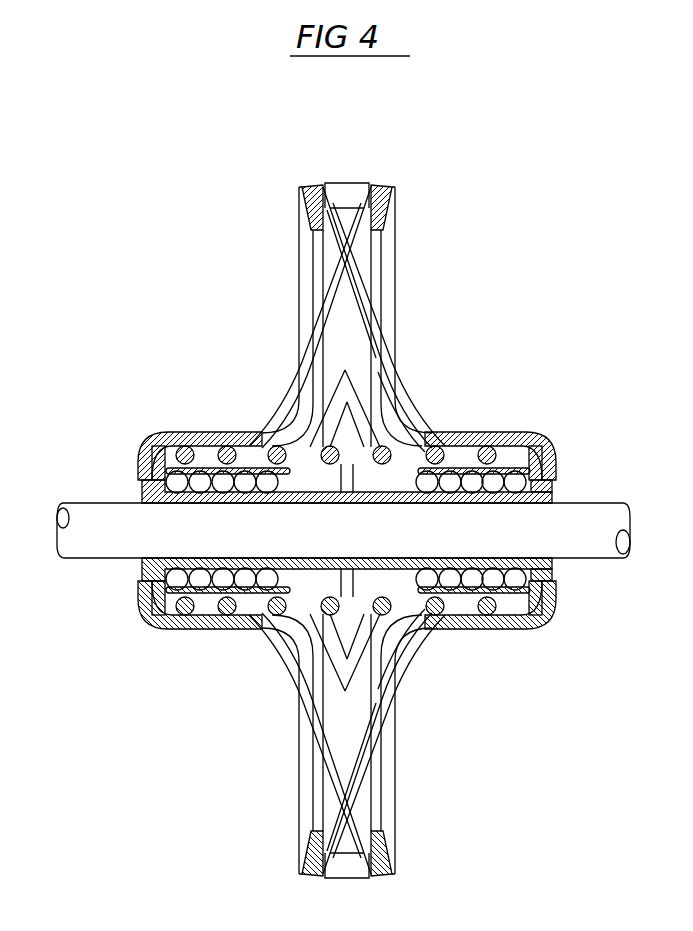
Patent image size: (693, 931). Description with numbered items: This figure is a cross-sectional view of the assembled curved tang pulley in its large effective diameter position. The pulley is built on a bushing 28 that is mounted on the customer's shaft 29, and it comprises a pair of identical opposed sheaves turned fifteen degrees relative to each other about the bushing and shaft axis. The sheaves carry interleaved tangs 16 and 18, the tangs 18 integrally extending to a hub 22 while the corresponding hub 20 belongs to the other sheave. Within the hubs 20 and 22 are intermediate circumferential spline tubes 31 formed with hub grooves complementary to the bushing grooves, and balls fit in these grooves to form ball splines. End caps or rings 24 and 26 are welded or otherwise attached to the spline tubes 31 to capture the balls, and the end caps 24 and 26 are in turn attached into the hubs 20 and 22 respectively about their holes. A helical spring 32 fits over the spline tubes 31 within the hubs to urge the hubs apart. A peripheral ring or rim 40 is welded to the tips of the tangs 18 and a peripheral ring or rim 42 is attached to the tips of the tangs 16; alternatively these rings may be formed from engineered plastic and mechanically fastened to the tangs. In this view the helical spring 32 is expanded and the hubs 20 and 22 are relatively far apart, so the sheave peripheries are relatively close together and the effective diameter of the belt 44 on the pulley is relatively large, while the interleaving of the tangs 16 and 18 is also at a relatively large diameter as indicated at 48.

The tangs 16 is at (330, 345).
The tangs 18 is at (366, 343).
The hub 20 is at (186, 432).
The hub 22 is at (507, 431).
The end cap or ring 24 is at (140, 458).
The end cap or ring 26 is at (529, 458).
The bushing 28 is at (142, 492).
The shaft 29 is at (98, 550).
The spline tubes 31 is at (243, 466).
The helical spring 32 is at (408, 433).
The peripheral ring or rim 40 is at (304, 230).
The peripheral ring or rim 42 is at (388, 240).
The belt 44 is at (343, 186).
The interleaving of the tangs at large diameter 48 is at (348, 274).